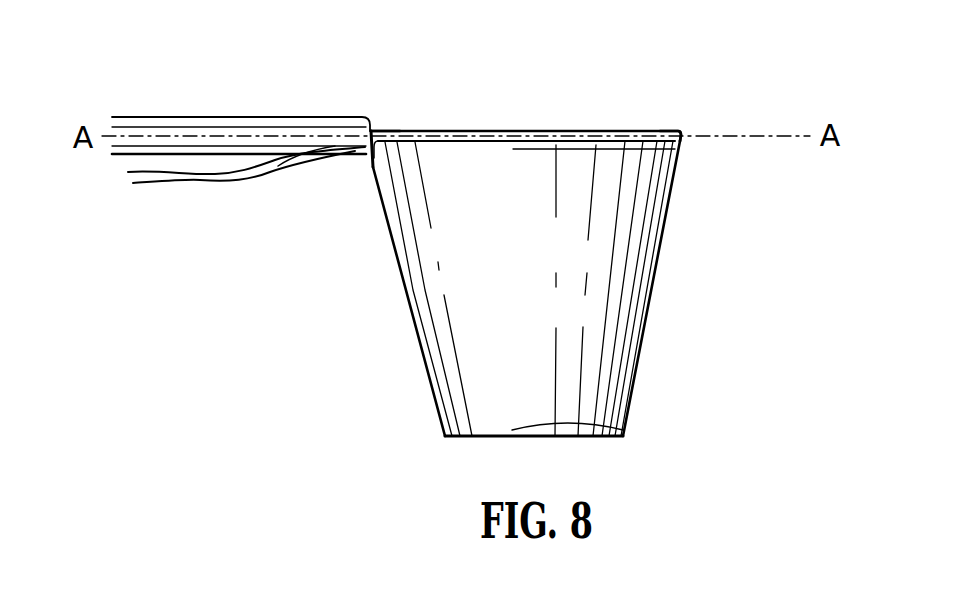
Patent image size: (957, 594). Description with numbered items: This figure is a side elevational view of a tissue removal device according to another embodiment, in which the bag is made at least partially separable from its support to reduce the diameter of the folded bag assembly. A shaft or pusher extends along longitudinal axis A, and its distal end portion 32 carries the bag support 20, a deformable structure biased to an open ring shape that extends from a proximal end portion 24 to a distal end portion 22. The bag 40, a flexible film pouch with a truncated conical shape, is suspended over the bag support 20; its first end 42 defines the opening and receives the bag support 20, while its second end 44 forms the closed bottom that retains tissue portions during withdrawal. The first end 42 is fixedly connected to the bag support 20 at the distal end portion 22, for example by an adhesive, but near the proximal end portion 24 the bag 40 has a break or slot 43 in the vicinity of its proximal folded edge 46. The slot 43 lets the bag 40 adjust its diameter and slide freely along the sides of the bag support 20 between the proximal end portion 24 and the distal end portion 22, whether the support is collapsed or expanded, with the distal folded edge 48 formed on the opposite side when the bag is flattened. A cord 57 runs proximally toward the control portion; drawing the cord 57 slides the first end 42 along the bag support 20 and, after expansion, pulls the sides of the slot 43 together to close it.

The bag support 20 is at (527, 128).
The distal end portion 22 is at (677, 128).
The proximal end portion 24 is at (388, 130).
The distal end portion 32 is at (371, 117).
The bag 40 is at (656, 255).
The first end 42 is at (683, 148).
The slot 43 is at (368, 163).
The second end 44 is at (625, 430).
The proximal folded edge 46 is at (396, 258).
The distal folded edge 48 is at (647, 328).
The cord 57 is at (127, 172).